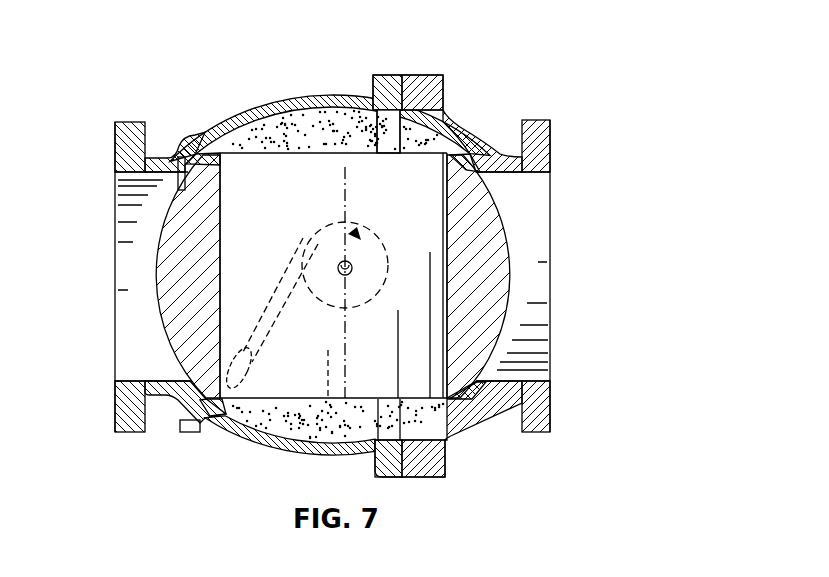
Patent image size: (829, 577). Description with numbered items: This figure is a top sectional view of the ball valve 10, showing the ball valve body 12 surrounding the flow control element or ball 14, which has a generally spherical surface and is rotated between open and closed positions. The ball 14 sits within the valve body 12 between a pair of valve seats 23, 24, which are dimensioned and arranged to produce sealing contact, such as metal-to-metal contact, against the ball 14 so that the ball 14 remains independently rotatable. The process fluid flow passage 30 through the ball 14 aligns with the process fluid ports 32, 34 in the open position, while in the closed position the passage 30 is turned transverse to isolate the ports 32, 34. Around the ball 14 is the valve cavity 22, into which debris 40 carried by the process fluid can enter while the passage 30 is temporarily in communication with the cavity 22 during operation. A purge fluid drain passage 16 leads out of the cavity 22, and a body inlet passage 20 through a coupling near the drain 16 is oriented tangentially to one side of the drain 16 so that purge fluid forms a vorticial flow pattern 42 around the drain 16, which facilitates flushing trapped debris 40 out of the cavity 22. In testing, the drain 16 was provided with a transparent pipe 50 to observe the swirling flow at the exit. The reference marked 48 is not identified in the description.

The ball valve 10 is at (582, 42).
The ball valve body 12 is at (332, 102).
The flow control element 14 is at (493, 280).
The purge fluid drain passage 16 is at (343, 262).
The body inlet passage 20 is at (248, 374).
The valve cavity 22 is at (250, 110).
The valve seat 23 is at (470, 400).
The valve seat 24 is at (207, 414).
The process fluid flow passage 30 is at (456, 182).
The process fluid port 32 is at (113, 275).
The process fluid port 34 is at (552, 276).
The debris 40 is at (347, 129).
The vorticial flow pattern 42 is at (345, 305).
The axis 48 is at (343, 194).
The transparent pipe 50 is at (392, 282).